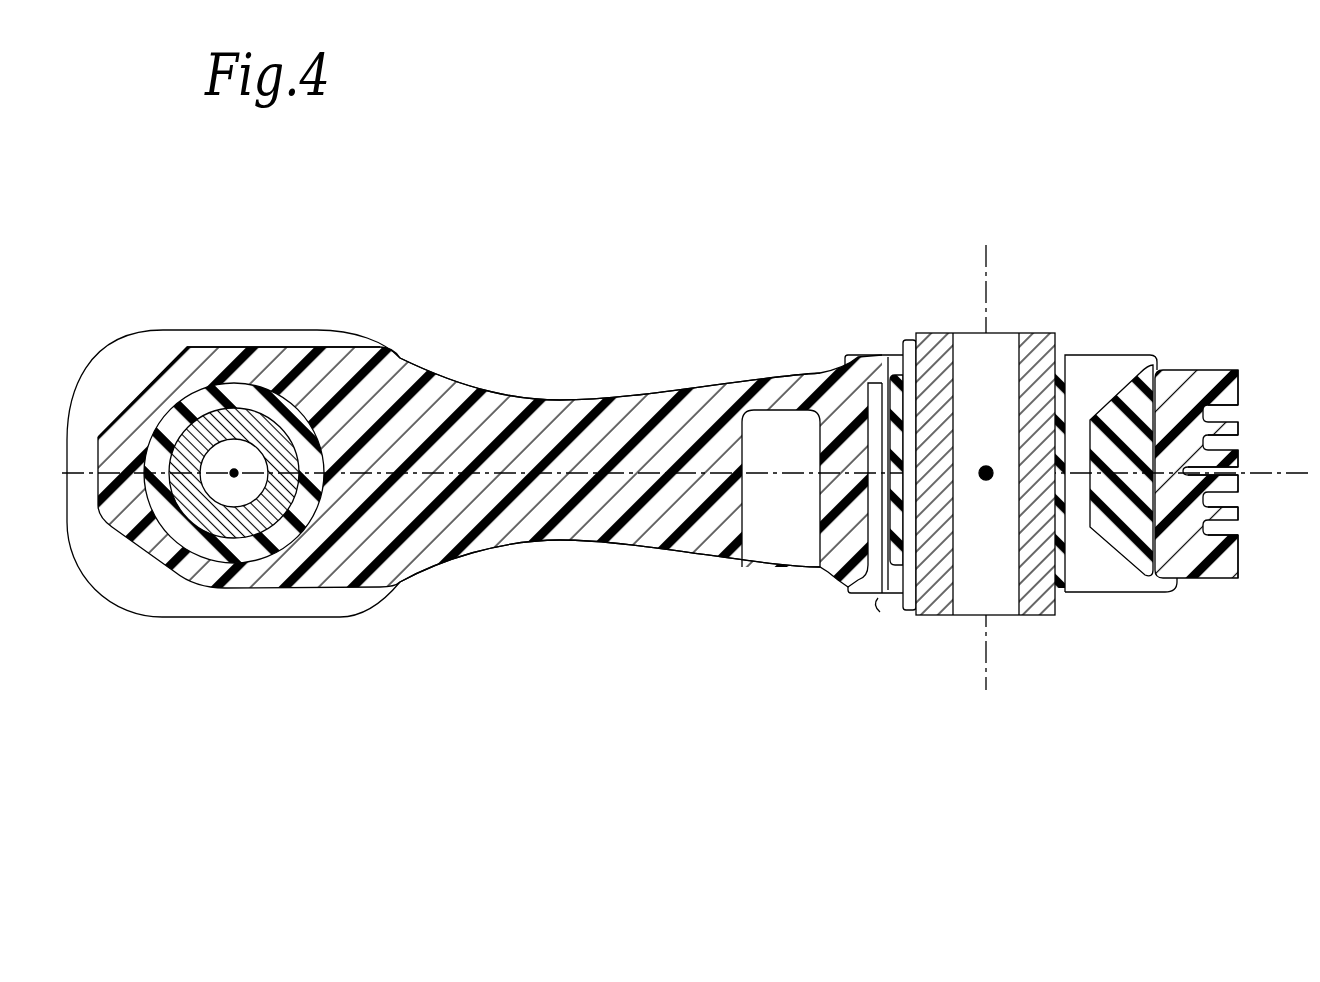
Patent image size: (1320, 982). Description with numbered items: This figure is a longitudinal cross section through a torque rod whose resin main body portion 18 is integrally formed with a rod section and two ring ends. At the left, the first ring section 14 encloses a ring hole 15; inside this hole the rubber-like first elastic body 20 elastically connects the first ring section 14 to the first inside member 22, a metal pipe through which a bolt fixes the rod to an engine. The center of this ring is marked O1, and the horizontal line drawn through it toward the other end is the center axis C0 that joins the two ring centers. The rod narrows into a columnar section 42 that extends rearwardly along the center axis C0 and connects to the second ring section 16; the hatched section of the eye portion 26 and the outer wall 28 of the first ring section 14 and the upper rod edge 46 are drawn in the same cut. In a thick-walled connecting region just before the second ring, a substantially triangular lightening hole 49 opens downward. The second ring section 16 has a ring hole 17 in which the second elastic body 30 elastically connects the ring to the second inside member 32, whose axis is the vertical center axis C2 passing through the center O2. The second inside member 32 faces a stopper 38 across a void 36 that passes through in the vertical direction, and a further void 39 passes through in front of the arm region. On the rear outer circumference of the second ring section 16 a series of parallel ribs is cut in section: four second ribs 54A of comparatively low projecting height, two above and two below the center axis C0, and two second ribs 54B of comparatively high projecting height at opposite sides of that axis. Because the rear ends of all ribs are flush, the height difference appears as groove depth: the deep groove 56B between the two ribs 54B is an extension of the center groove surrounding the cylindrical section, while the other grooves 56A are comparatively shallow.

The first ring section 14 is at (233, 466).
The ring hole 15 is at (248, 562).
The second ring section 16 is at (1081, 462).
The ring hole 17 is at (1160, 582).
The main body portion 18 is at (462, 336).
The first elastic body 20 is at (180, 548).
The first inside member 22 is at (213, 540).
The eye portion of rod body 26 is at (297, 348).
The outer housing 28 is at (130, 355).
The second elastic body 30 is at (908, 336).
The second inside member 32 is at (1028, 335).
The void 36 is at (1082, 593).
The stopper 38 is at (1098, 530).
The void 39 is at (882, 600).
The columnar section 42 is at (487, 540).
The upper edge of rod 46 is at (553, 400).
The lightening hole 49 is at (782, 530).
The second ribs 54A is at (1240, 388).
The second ribs 54B is at (1240, 458).
The grooves 56A is at (1210, 413).
The deep groove 56B is at (1190, 471).
The center of the first ring section O1 is at (233, 468).
The center of the second ring section O2 is at (992, 470).
The center axis C0 is at (672, 469).
The center axis C2 is at (986, 455).